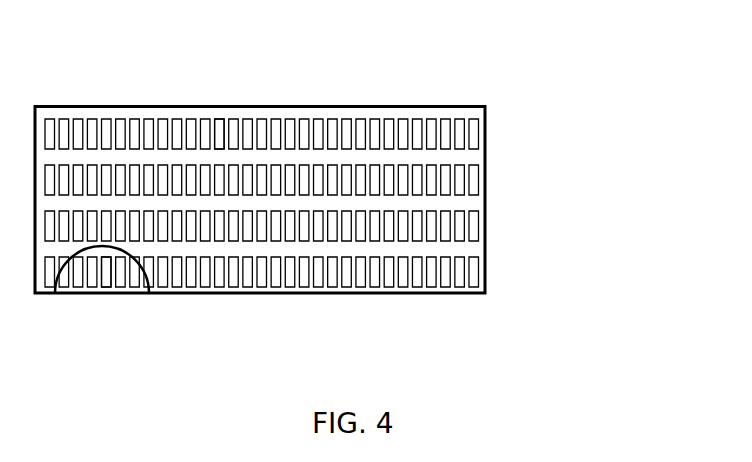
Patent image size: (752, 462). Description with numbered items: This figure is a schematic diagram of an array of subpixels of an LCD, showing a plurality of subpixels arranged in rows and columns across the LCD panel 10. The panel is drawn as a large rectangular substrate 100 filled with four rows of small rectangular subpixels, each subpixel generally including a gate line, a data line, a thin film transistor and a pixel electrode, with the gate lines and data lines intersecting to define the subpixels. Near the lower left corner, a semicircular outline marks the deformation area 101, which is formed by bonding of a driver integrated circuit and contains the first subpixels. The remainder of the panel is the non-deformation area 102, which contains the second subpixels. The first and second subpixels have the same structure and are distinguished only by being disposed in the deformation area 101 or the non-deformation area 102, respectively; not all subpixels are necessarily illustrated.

The LCD panel 10 is at (60, 33).
The substrate 100 is at (485, 235).
The deformation area 101 is at (83, 292).
The non-deformation area 102 is at (334, 209).